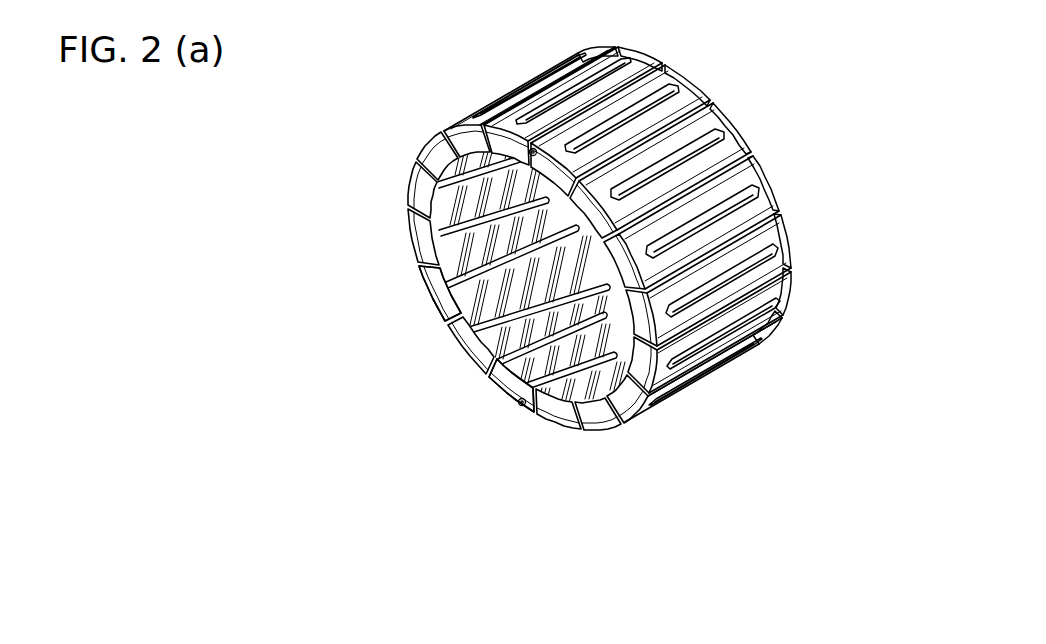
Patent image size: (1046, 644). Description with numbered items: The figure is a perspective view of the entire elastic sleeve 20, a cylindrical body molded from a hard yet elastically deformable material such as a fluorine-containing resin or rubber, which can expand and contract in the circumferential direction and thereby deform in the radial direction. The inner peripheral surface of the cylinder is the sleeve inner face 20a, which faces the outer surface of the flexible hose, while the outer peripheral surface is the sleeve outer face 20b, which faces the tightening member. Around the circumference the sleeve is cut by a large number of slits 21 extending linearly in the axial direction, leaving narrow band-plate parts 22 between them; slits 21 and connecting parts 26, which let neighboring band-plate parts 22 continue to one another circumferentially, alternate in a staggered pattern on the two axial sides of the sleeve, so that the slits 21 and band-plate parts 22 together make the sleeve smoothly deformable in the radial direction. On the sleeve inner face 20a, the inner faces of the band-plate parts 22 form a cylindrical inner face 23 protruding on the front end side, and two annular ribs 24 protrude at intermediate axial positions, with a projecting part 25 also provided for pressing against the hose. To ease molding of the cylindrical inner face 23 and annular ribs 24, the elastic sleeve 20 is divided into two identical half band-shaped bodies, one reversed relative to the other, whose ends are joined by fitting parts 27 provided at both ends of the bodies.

The elastic sleeve 20 is at (447, 125).
The sleeve inner face 20a is at (420, 192).
The sleeve outer face 20b is at (728, 300).
The slit 21 is at (700, 108).
The band-plate part 22 is at (715, 188).
The cylindrical inner face 23 is at (420, 246).
The annular rib 24 is at (438, 300).
The projecting part 25 is at (497, 384).
The connecting part 26 is at (765, 300).
The fitting part 27 is at (533, 148).